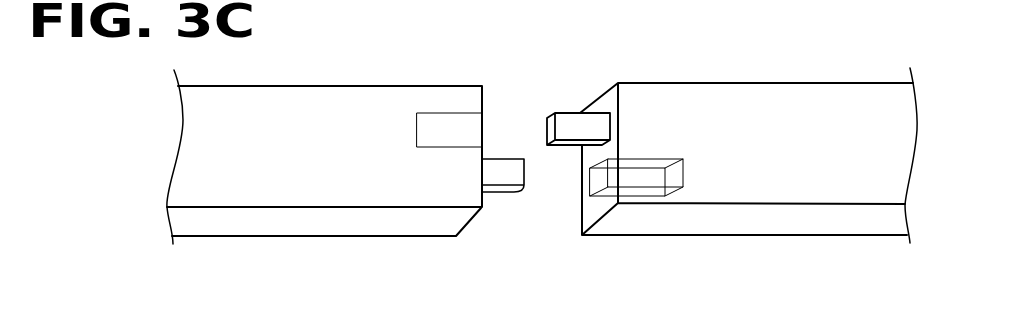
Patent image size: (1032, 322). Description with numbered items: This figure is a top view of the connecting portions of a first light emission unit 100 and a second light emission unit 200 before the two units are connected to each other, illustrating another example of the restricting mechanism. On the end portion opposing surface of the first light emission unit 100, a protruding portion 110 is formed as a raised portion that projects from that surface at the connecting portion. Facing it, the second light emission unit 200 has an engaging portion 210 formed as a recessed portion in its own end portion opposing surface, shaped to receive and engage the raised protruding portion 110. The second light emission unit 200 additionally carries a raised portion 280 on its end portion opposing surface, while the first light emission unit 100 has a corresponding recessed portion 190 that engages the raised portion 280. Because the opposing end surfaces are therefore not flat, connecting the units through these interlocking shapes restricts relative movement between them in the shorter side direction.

The first light emission unit 100 is at (722, 83).
The protruding portion 110 is at (578, 111).
The recessed portion 190 is at (640, 198).
The second light emission unit 200 is at (333, 85).
The engaging portion 210 is at (443, 112).
The raised portion 280 is at (500, 194).